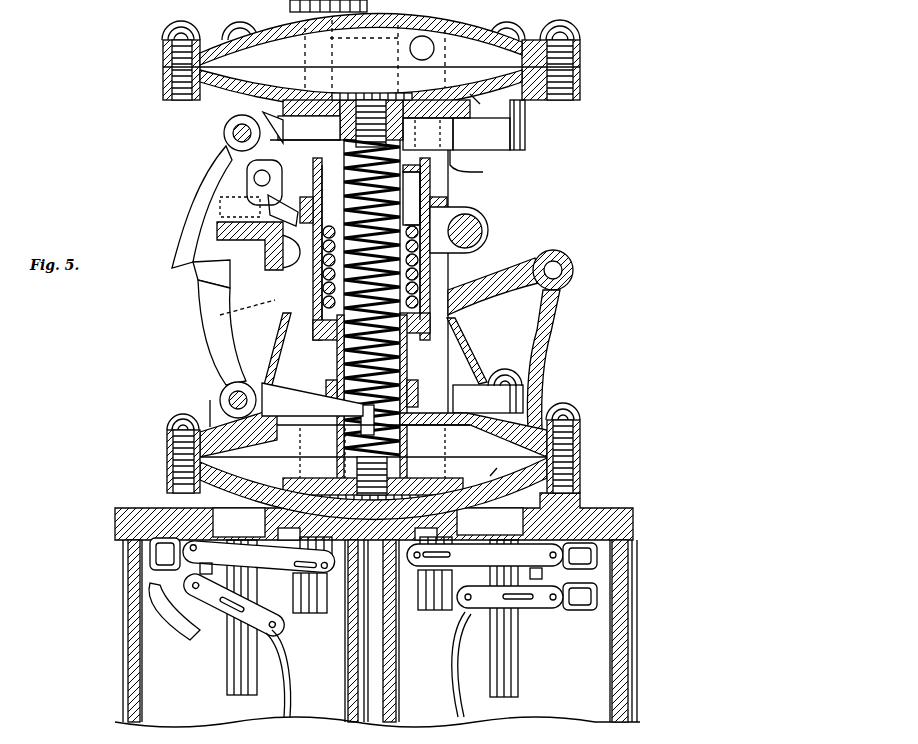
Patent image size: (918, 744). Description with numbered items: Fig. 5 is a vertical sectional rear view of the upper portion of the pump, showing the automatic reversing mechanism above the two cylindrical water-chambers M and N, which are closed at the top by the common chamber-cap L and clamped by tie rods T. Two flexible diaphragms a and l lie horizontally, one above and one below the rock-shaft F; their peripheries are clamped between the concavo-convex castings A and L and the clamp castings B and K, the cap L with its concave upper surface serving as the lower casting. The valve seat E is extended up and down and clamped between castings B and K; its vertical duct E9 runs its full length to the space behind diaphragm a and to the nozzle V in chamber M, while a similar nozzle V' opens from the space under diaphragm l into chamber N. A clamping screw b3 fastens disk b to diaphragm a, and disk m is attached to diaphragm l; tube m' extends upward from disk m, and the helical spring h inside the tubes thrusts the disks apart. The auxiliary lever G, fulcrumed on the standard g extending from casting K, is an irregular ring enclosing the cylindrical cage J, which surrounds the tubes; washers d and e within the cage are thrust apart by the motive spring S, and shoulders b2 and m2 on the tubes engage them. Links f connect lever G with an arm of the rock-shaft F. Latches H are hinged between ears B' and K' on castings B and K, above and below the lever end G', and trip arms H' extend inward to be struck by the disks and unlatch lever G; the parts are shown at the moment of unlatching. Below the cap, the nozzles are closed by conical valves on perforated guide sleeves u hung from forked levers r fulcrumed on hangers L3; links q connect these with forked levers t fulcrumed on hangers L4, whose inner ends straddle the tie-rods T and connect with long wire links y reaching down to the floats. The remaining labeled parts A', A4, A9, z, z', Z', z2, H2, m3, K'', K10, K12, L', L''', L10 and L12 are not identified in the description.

The casting A is at (380, 57).
The top pipe A' is at (314, 12).
The chamber A4 is at (353, 42).
The passage A9 is at (422, 48).
The clamp casting B is at (399, 89).
The ear B' is at (236, 127).
The diaphragm a is at (469, 91).
The disk b is at (366, 121).
The shoulder b2 is at (373, 249).
The clamping screw b3 is at (372, 111).
The bolt post z is at (371, 70).
The lower bolt post z' is at (183, 440).
The lower right bolt post Z' is at (563, 440).
The bolt head z2 is at (505, 365).
The valve seat E is at (486, 256).
The vertical duct E9 is at (428, 134).
The rock-shaft F is at (368, 206).
The link f is at (283, 208).
The auxiliary lever G is at (418, 310).
The projection G' is at (249, 233).
The standard g is at (541, 360).
The latch H is at (223, 265).
The trip arm H' is at (305, 148).
The lever tip H2 is at (368, 419).
The cage J is at (411, 195).
The washer d is at (416, 213).
The motive spring S is at (330, 289).
The washer e is at (350, 320).
The helical spring h is at (348, 336).
The disk m is at (413, 469).
The tube m' is at (390, 397).
The shoulder m2 is at (382, 393).
The block m3 is at (373, 482).
The clamp casting K is at (373, 443).
The ear K' is at (283, 404).
The chamber K'' is at (286, 443).
The chamber K10 is at (327, 443).
The chamber K12 is at (467, 443).
The chamber-cap L is at (368, 522).
The base plate L' is at (374, 513).
The chamber L''' is at (287, 469).
The hanger L3 is at (357, 534).
The hanger L4 is at (371, 569).
The chamber L10 is at (327, 469).
The chamber L12 is at (467, 467).
The diaphragm l is at (493, 469).
The water-chamber M is at (377, 633).
The water-chamber N is at (510, 631).
The tie rod T is at (372, 627).
The nozzle V is at (320, 546).
The nozzle V' is at (426, 546).
The link q is at (373, 589).
The forked lever r is at (372, 556).
The forked lever t is at (371, 605).
The guide sleeve u is at (372, 591).
The wire link y is at (366, 664).